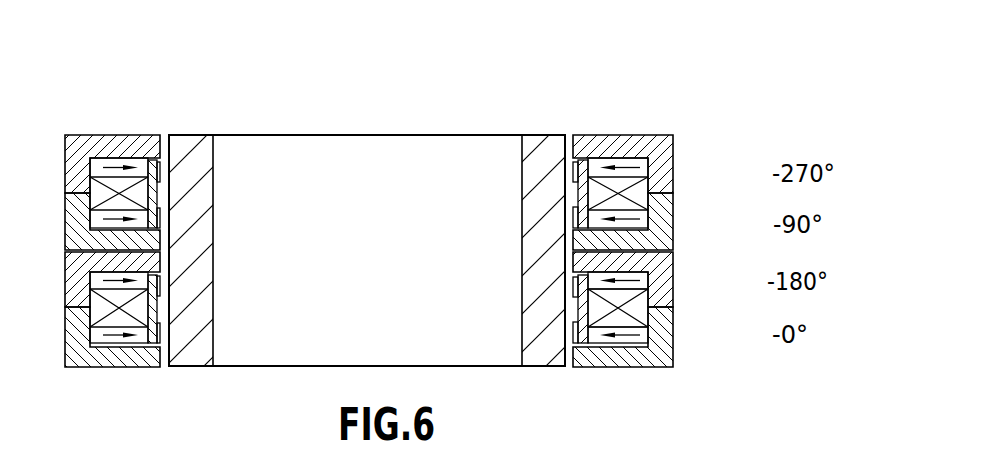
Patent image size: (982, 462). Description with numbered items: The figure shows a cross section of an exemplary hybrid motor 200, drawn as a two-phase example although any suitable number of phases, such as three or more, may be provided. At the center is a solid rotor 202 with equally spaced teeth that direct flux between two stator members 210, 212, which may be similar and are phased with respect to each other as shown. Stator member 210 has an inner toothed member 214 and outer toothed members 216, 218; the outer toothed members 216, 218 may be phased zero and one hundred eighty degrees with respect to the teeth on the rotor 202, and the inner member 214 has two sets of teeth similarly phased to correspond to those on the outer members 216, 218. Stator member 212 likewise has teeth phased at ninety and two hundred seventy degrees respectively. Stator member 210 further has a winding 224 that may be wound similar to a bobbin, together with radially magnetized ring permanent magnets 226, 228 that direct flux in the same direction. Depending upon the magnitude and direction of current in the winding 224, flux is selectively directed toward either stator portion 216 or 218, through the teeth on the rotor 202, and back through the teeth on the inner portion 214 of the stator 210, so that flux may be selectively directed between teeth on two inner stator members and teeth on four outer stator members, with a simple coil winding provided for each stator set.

The hybrid motor 200 is at (456, 91).
The solid rotor 202 is at (259, 131).
The stator member 210 is at (686, 314).
The stator member 212 is at (686, 186).
The inner toothed member 214 is at (578, 314).
The outer toothed member 216 is at (632, 368).
The outer toothed member 218 is at (583, 266).
The winding 224 is at (610, 322).
The radially magnetized ring permanent magnet 226 is at (642, 335).
The radially magnetized ring permanent magnet 228 is at (642, 285).